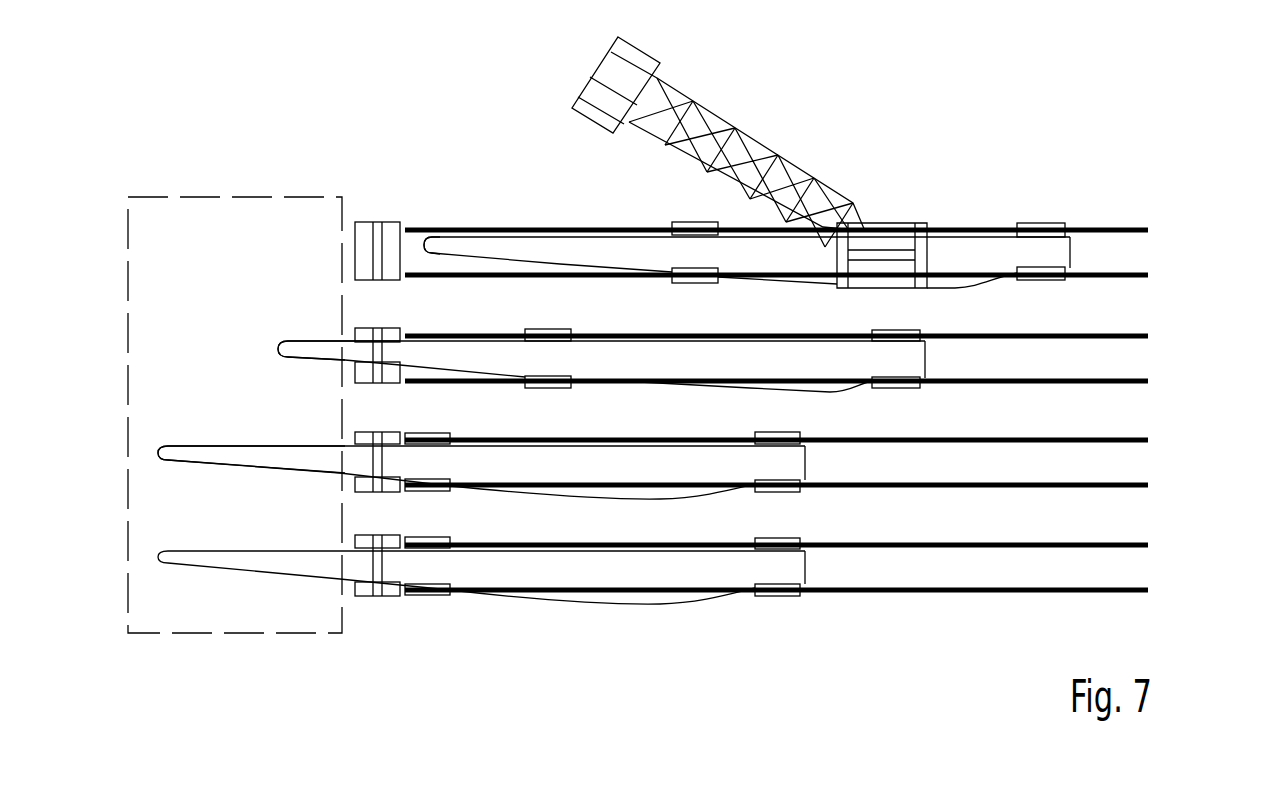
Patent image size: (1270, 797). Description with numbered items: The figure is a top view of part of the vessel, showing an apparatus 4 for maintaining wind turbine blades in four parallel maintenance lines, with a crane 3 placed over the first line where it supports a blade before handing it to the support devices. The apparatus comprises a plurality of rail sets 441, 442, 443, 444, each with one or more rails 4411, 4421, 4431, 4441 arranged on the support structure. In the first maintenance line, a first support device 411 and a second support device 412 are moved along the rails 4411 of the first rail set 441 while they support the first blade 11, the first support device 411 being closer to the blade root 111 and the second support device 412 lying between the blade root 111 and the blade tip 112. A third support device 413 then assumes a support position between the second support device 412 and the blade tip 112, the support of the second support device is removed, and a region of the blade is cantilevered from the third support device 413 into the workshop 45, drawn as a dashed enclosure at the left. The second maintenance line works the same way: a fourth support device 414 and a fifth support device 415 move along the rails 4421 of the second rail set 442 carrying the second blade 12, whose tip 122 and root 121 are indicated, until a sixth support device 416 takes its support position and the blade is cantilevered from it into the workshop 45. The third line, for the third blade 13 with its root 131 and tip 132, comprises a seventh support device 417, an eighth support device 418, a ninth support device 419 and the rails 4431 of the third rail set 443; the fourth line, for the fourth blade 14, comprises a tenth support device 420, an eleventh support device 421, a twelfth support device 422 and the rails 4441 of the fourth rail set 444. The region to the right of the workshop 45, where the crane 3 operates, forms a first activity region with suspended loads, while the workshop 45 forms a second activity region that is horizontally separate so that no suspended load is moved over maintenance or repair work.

The crane 3 is at (745, 128).
The rail assembly 4 is at (828, 474).
The workshop 45 is at (145, 197).
The first blade 11 is at (752, 204).
The blade root 111 is at (1075, 238).
The blade tip 112 is at (412, 238).
The second blade 12 is at (590, 266).
The second tube end portion 121 is at (940, 358).
The blade tip 122 is at (280, 348).
The third blade 13 is at (488, 429).
The third tube end portion 131 is at (813, 464).
The third tube tip 132 is at (160, 448).
The fourth blade 14 is at (575, 553).
The first support device 411 is at (1035, 282).
The second support device 412 is at (680, 284).
The third support device 413 is at (400, 282).
The fourth support device 414 is at (890, 384).
The fifth support device 415 is at (548, 390).
The sixth support device 416 is at (392, 386).
The seventh support device 417 is at (770, 438).
The eighth support device 418 is at (448, 492).
The ninth support device 419 is at (372, 494).
The tenth support device 420 is at (770, 591).
The eleventh support device 421 is at (440, 600).
The twelfth support device 422 is at (378, 600).
The first rail set 441 is at (1156, 277).
The rails of first rail set 4411 is at (1150, 233).
The second rail set 442 is at (1157, 384).
The rails of second rail set 4421 is at (1150, 340).
The third rail set 443 is at (1157, 489).
The rails of third rail set 4431 is at (1150, 443).
The fourth rail set 444 is at (1157, 575).
The rails of fourth rail set 4441 is at (1150, 548).